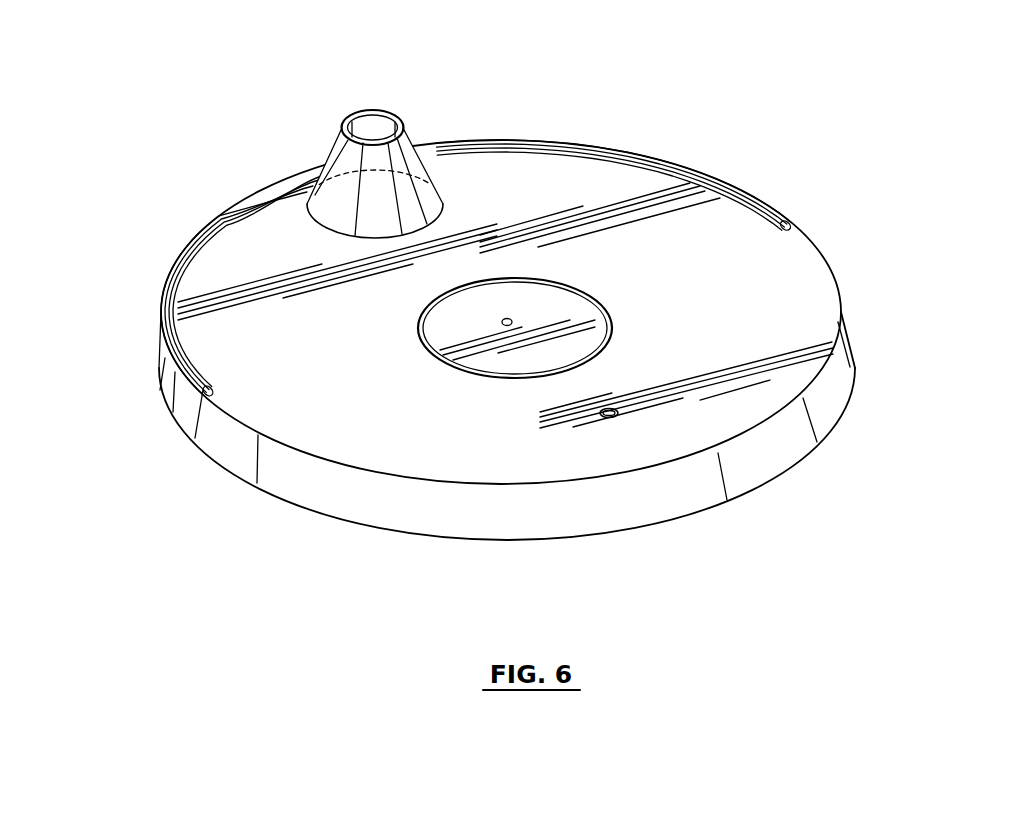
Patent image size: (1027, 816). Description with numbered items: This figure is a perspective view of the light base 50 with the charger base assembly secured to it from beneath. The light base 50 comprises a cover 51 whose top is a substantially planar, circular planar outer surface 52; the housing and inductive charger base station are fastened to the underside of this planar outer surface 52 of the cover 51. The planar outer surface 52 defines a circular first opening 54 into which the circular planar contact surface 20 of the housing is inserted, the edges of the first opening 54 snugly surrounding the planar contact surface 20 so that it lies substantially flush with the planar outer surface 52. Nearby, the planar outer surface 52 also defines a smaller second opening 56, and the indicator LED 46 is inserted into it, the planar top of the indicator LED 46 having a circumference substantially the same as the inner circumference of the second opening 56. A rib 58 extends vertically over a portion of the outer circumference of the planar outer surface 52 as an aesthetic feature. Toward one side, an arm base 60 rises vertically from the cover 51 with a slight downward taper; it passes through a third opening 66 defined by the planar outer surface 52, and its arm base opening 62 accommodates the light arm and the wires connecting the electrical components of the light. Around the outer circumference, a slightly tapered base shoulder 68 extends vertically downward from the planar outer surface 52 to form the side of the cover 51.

The planar contact surface 20 is at (612, 233).
The indicator LED 46 is at (668, 500).
The light base 50 is at (563, 322).
The cover 51 is at (832, 287).
The planar outer surface 52 is at (803, 318).
The first opening 54 is at (555, 280).
The second opening 56 is at (607, 420).
The rib 58 is at (563, 143).
The arm base 60 is at (364, 151).
The arm base opening 62 is at (367, 125).
The third opening 66 is at (345, 203).
The base shoulder 68 is at (768, 462).